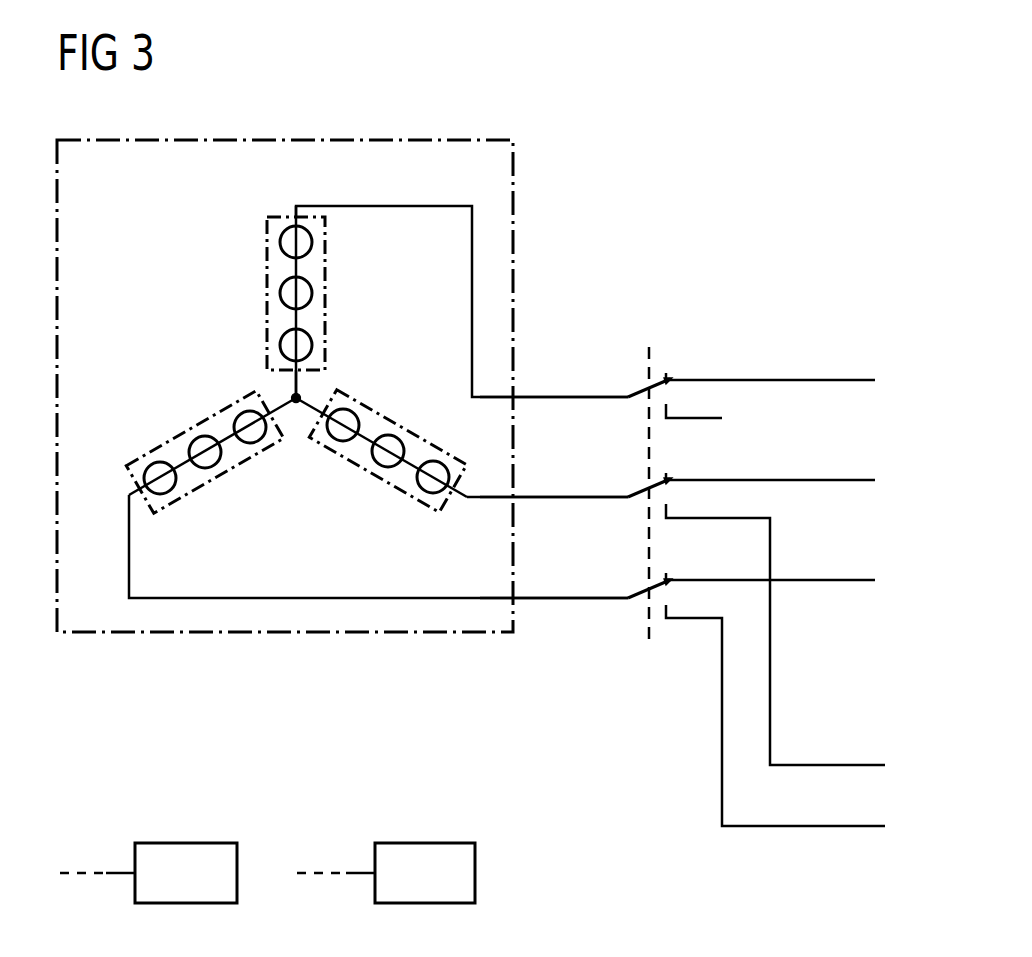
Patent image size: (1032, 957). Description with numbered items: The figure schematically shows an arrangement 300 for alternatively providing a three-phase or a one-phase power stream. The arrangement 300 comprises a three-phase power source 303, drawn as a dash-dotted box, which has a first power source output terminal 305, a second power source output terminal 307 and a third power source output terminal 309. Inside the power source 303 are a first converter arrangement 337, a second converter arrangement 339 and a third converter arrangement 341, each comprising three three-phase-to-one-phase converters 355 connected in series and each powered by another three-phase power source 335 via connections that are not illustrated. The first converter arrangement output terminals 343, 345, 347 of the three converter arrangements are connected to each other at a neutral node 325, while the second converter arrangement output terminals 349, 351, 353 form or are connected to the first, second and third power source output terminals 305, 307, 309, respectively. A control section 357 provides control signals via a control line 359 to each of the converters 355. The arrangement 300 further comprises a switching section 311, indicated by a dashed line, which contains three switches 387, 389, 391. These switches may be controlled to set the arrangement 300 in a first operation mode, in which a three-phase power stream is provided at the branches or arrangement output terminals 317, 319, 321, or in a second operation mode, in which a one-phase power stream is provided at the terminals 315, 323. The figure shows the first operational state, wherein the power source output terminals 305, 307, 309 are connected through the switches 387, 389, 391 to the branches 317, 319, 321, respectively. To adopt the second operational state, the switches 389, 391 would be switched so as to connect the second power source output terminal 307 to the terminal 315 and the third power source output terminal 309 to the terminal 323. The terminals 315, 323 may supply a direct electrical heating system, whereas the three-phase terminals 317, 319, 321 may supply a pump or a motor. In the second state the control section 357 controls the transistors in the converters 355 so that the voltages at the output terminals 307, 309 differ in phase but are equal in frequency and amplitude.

The arrangement 300 is at (806, 172).
The 3-phase power source 303 is at (288, 140).
The first power source output terminal 305 is at (514, 395).
The second power source output terminal 307 is at (514, 495).
The third power source output terminal 309 is at (514, 596).
The switching section 311 is at (572, 680).
The terminal 315 is at (772, 536).
The branch 317 is at (780, 378).
The branch 319 is at (780, 478).
The branch 321 is at (825, 582).
The terminal 323 is at (697, 620).
The neutral node 325 is at (302, 397).
The other 3-phase power source 335 is at (187, 843).
The first converter arrangement 337 is at (330, 260).
The second converter arrangement 339 is at (390, 490).
The third converter arrangement 341 is at (203, 492).
The first converter arrangement output terminal 343 is at (284, 380).
The first converter arrangement output terminal 345 is at (312, 404).
The first converter arrangement output terminal 347 is at (296, 405).
The second converter arrangement output terminal 349 is at (296, 216).
The second converter arrangement output terminal 351 is at (454, 497).
The second converter arrangement output terminal 353 is at (136, 488).
The 3-phase-to-1-phase converter 355 is at (280, 248).
The control section 357 is at (427, 843).
The control line 359 is at (362, 872).
The switch 387 is at (640, 393).
The switch 389 is at (640, 493).
The switch 391 is at (640, 594).